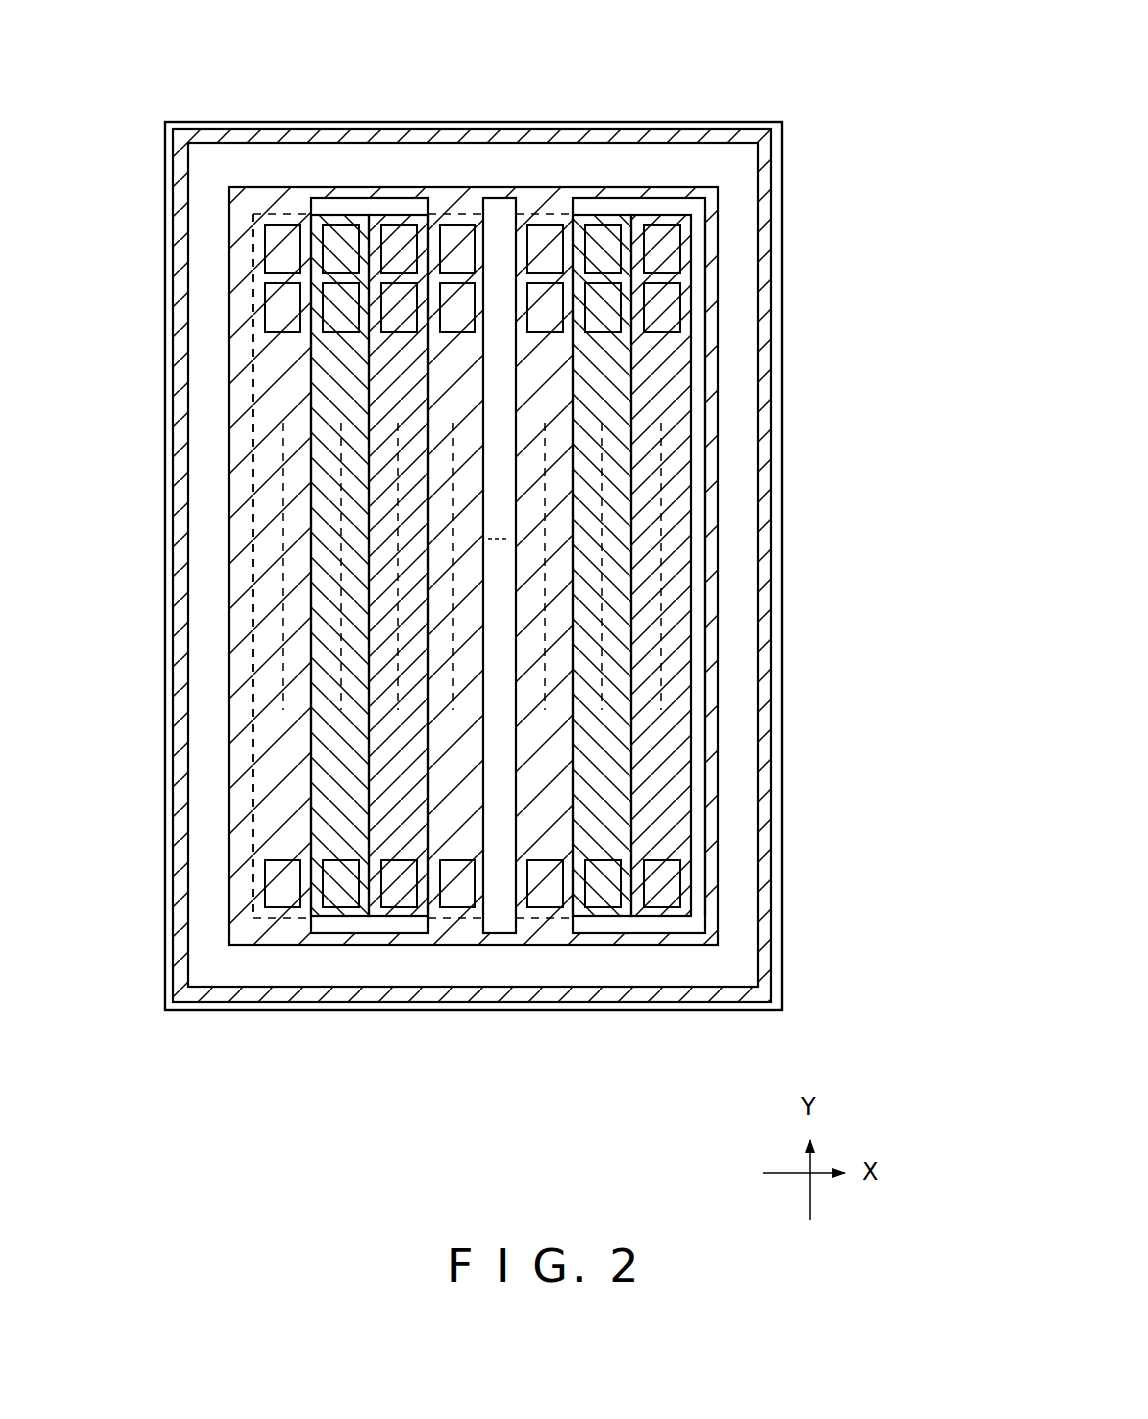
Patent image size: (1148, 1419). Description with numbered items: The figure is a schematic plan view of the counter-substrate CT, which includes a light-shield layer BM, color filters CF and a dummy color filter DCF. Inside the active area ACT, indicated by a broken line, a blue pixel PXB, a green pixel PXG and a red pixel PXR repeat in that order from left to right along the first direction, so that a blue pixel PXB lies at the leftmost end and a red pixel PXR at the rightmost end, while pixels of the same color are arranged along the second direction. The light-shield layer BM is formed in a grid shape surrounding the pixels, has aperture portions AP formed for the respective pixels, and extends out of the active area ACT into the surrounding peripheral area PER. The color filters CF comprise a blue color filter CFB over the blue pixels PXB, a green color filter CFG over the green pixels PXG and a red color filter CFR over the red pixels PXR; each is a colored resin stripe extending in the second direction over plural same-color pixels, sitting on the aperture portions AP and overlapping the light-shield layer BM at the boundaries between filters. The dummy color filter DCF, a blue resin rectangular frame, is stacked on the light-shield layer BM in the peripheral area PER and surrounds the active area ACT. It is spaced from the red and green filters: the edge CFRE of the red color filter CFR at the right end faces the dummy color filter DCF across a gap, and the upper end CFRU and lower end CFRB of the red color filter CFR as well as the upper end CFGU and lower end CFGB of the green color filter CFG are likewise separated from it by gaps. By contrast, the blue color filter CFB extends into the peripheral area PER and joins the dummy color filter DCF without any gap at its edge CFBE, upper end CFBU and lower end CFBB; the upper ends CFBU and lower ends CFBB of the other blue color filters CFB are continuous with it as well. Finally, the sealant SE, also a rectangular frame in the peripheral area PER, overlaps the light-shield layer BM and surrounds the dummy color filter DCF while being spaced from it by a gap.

The counter-substrate CT is at (784, 120).
The sealant SE is at (771, 880).
The peripheral area PER is at (728, 970).
The light-shield layer BM is at (740, 717).
The color filters CF is at (867, 335).
The blue color filter CFB is at (293, 362).
The green color filter CFG is at (343, 385).
The red color filter CFR is at (413, 430).
The dummy color filter DCF is at (712, 647).
The active area ACT is at (245, 923).
The aperture portions AP is at (455, 225).
The upper end of blue color filter CFBU is at (257, 210).
The lower end of blue color filter CFBB is at (265, 927).
The edge of blue color filter CFBE is at (249, 695).
The edge of red color filter CFRE is at (704, 786).
The upper end of green color filter CFGU is at (339, 209).
The upper end of red color filter CFRU is at (394, 209).
The lower end of green color filter CFGB is at (352, 929).
The lower end of red color filter CFRB is at (418, 929).
The blue pixel PXB is at (289, 919).
The green pixel PXG is at (327, 919).
The red pixel PXR is at (390, 919).